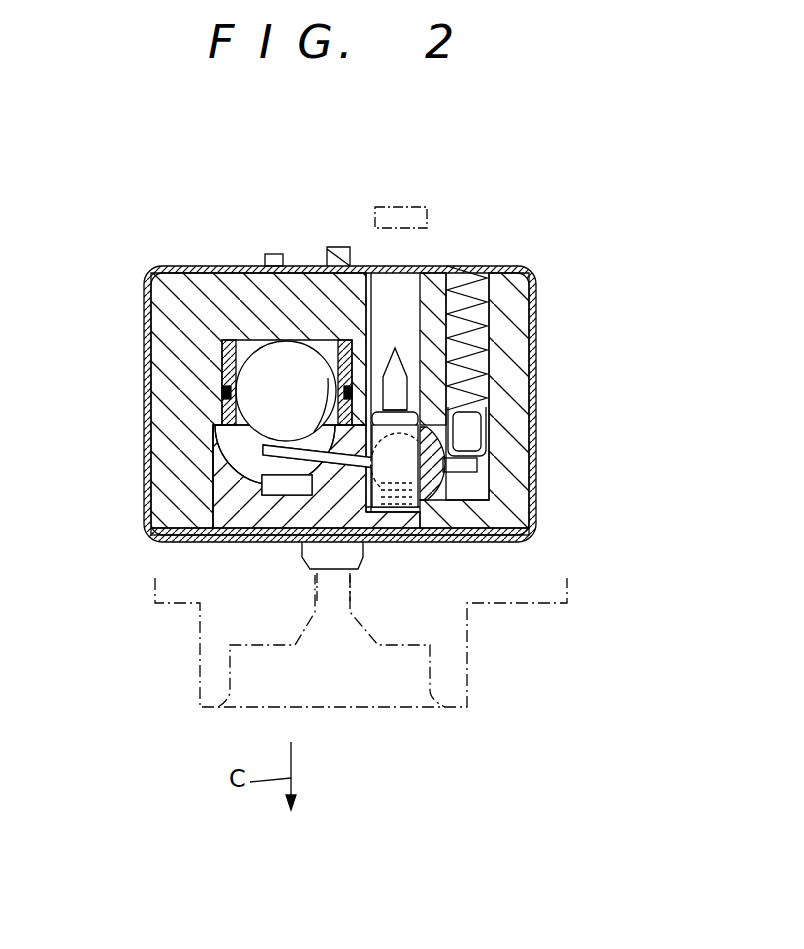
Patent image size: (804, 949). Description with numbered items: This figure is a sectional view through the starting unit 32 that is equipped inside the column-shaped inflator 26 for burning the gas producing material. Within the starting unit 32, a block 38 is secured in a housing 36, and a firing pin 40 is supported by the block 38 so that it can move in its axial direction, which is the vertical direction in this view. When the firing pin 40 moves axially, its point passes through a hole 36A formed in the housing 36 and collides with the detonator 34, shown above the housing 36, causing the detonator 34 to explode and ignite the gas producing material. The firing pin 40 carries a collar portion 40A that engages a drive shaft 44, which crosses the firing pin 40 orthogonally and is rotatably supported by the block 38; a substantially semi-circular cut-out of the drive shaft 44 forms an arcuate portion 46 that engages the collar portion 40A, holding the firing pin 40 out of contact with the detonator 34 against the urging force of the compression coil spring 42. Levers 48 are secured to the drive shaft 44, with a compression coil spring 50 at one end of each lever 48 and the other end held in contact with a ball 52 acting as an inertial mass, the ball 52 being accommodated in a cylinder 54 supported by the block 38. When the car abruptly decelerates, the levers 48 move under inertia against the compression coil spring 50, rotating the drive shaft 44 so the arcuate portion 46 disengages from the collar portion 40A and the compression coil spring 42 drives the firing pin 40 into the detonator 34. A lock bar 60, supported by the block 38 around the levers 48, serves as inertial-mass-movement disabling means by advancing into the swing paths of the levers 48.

The inflator 26 is at (165, 605).
The starting unit 32 is at (541, 262).
The detonator 34 is at (401, 210).
The housing 36 is at (150, 490).
The hole 36A is at (405, 265).
The block 38 is at (165, 310).
The firing pin 40 is at (395, 357).
The collar portion 40A is at (452, 514).
The compression coil spring 42 is at (402, 520).
The drive shaft 44 is at (437, 440).
The arcuate portion 46 is at (440, 498).
The lever 48 is at (263, 456).
The compression coil spring 50 is at (470, 338).
The ball 52 is at (295, 352).
The cylinder 54 is at (240, 358).
The lock bar 60 is at (322, 443).